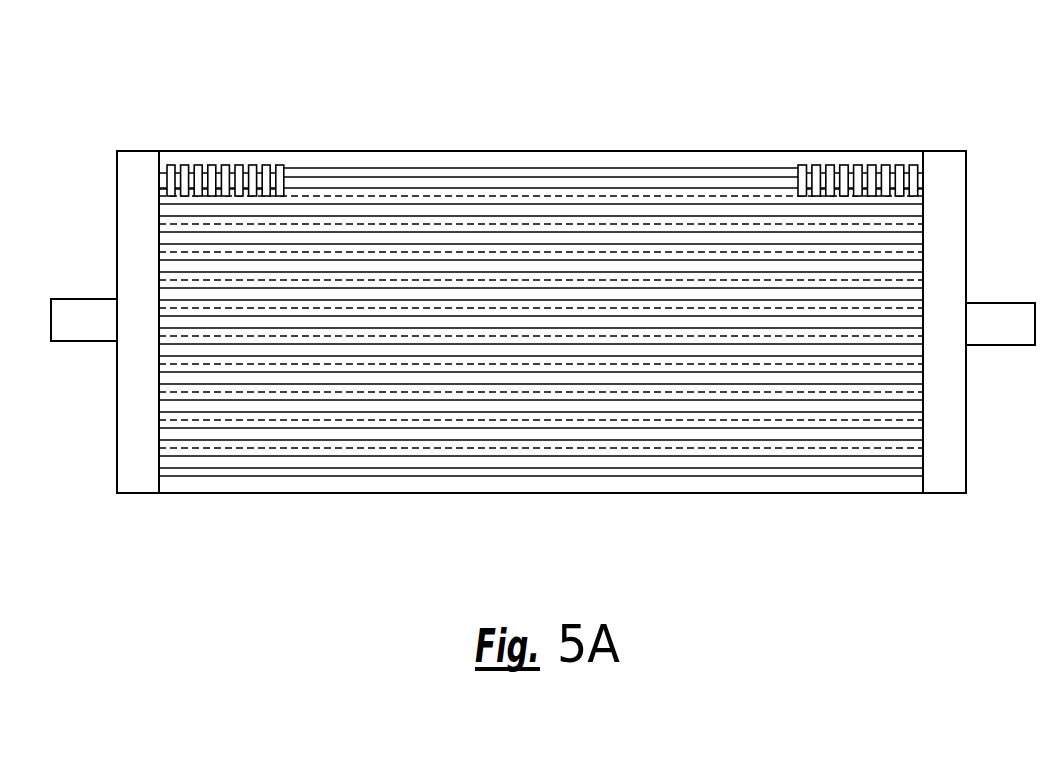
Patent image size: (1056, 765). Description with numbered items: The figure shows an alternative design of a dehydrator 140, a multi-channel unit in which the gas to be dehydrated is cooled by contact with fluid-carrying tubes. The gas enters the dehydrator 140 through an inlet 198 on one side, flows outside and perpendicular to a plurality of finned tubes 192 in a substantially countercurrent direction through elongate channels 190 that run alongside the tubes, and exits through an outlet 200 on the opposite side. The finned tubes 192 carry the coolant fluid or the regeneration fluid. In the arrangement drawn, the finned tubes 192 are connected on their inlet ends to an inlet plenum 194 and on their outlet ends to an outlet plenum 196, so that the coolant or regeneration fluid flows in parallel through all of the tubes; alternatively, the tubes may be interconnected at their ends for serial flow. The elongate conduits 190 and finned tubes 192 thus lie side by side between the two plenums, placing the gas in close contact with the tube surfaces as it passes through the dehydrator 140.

The dehydrator 140 is at (543, 300).
The elongate conduit 190 is at (610, 198).
The finned tubes 192 is at (755, 183).
The inlet plenum 194 is at (942, 493).
The outlet plenum 196 is at (136, 493).
The inlet 198 is at (80, 336).
The outlet 200 is at (1004, 340).